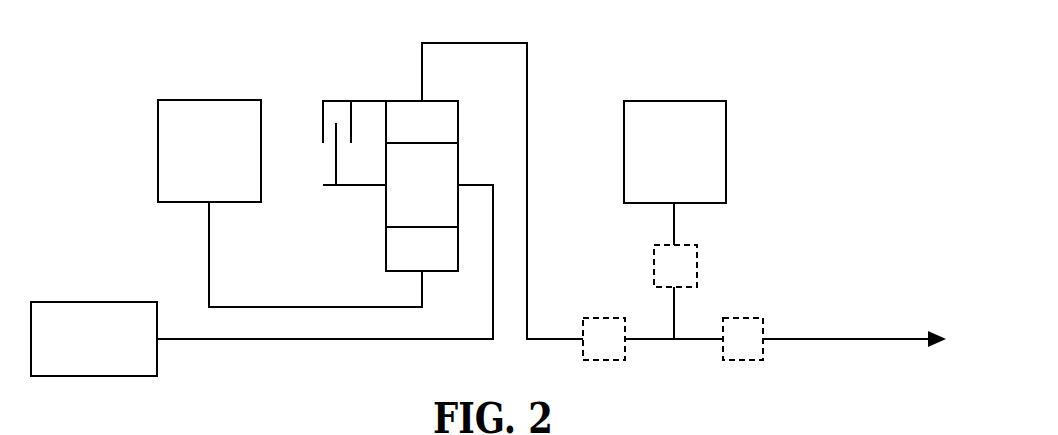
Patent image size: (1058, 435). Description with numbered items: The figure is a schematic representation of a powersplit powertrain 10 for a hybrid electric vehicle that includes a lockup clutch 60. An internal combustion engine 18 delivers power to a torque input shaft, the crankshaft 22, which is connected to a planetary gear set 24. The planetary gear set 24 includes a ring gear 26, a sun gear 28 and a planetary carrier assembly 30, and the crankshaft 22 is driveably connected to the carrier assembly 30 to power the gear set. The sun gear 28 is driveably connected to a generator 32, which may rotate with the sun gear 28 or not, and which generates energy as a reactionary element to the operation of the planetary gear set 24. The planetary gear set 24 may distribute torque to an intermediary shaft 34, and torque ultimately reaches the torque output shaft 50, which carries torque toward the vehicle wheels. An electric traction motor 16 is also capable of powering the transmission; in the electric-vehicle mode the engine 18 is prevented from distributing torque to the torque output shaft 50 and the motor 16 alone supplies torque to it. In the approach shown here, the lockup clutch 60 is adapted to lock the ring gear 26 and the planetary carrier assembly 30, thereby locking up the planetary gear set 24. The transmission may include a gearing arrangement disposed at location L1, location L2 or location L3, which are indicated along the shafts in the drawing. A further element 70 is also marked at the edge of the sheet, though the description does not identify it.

The powersplit powertrain 10 is at (220, 46).
The electric traction motor 16 is at (657, 101).
The internal combustion engine 18 is at (115, 302).
The crankshaft 22 is at (357, 339).
The planetary gear set 24 is at (437, 101).
The ring gear 26 is at (433, 133).
The sun gear 28 is at (433, 259).
The planetary carrier assembly 30 is at (433, 195).
The generator 32 is at (209, 100).
The intermediary shaft 34 is at (550, 339).
The torque output shaft 50 is at (851, 340).
The lockup clutch 60 is at (368, 101).
The controller 70 is at (757, 434).
The location L1 is at (583, 330).
The location L2 is at (697, 275).
The location L3 is at (763, 330).